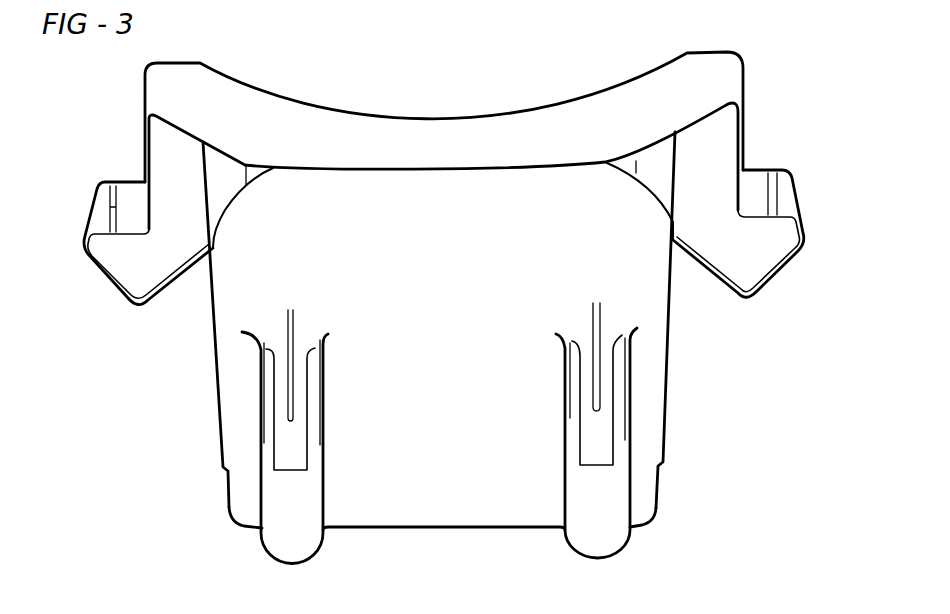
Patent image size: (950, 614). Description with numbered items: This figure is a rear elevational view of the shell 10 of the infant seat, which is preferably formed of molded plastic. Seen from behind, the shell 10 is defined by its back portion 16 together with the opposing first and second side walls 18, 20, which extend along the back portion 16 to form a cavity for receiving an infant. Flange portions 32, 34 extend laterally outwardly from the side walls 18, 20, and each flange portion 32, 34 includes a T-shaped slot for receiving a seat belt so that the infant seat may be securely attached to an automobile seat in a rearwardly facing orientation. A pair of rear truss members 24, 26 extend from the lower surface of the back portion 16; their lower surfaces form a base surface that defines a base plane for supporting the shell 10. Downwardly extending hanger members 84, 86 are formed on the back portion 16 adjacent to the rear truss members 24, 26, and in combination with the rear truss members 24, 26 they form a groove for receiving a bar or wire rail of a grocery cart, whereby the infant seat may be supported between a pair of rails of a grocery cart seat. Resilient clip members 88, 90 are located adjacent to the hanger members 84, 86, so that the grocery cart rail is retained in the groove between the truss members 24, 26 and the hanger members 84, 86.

The shell 10 is at (218, 427).
The back portion 16 is at (592, 268).
The first side wall 18 is at (213, 335).
The second side wall 20 is at (668, 352).
The first rear truss member 24 is at (307, 551).
The second rear truss member 26 is at (573, 545).
The first flange portion 32 is at (89, 259).
The second flange portion 34 is at (799, 195).
The first hanger member 84 is at (263, 373).
The second hanger member 86 is at (622, 360).
The first resilient clip member 88 is at (297, 447).
The second resilient clip member 90 is at (593, 428).